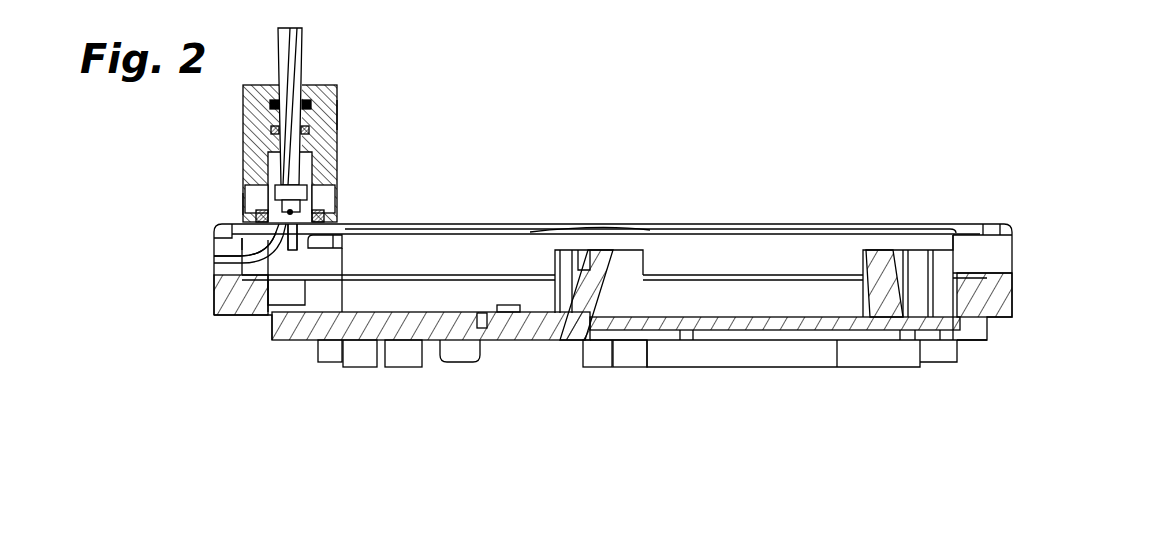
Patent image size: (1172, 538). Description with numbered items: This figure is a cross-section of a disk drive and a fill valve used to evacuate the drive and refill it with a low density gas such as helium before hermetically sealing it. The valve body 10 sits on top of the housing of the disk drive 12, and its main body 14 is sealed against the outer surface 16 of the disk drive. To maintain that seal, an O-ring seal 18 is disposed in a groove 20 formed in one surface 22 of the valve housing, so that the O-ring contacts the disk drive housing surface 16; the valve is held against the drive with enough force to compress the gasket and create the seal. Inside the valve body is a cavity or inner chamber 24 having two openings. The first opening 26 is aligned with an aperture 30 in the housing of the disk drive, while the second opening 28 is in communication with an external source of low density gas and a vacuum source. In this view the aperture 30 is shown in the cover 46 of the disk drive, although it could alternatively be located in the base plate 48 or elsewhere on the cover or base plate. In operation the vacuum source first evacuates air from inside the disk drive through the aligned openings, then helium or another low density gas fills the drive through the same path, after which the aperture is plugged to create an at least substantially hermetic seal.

The valve body 10 is at (348, 110).
The disk drive 12 is at (660, 198).
The main body 14 is at (340, 143).
The outer surface 16 is at (480, 224).
The O-ring seal 18 is at (256, 216).
The groove 20 is at (258, 182).
The surface 22 is at (243, 237).
The inner chamber 24 is at (338, 172).
The first opening 26 is at (293, 215).
The second opening 28 is at (238, 193).
The aperture 30 is at (270, 244).
The cover 46 is at (970, 250).
The base plate 48 is at (1000, 300).